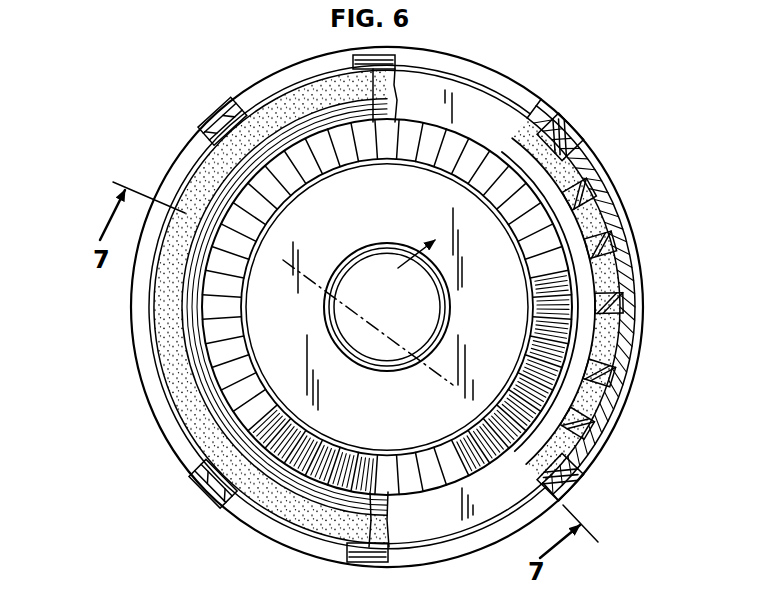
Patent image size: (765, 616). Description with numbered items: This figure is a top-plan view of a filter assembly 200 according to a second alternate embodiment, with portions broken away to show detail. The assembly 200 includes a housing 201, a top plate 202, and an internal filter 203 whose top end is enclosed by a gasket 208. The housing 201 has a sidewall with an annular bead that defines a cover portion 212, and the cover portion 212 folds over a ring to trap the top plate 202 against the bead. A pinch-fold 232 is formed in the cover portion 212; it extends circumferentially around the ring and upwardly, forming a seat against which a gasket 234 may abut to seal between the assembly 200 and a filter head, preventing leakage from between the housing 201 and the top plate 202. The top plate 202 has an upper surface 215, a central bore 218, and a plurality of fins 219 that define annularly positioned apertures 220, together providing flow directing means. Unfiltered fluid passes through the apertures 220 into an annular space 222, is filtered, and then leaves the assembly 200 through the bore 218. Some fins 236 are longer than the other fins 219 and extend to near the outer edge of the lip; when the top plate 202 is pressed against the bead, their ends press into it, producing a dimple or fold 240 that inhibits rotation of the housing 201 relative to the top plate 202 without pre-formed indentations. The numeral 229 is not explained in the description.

The assembly 200 is at (604, 135).
The housing 201 is at (138, 372).
The top plate 202 is at (401, 266).
The internal filter 203 is at (617, 345).
The gasket 208 is at (590, 397).
The cover portion 212 is at (143, 322).
The upper surface 215 is at (470, 297).
The central bore 218 is at (386, 346).
The fins 219 is at (247, 310).
The apertures 220 is at (331, 172).
The annular space 222 is at (622, 278).
The end region 229 is at (452, 522).
The pinch-fold 232 is at (145, 293).
The gasket 234 is at (190, 413).
The longer fins 236 is at (217, 125).
The dimple or fold 240 is at (207, 129).